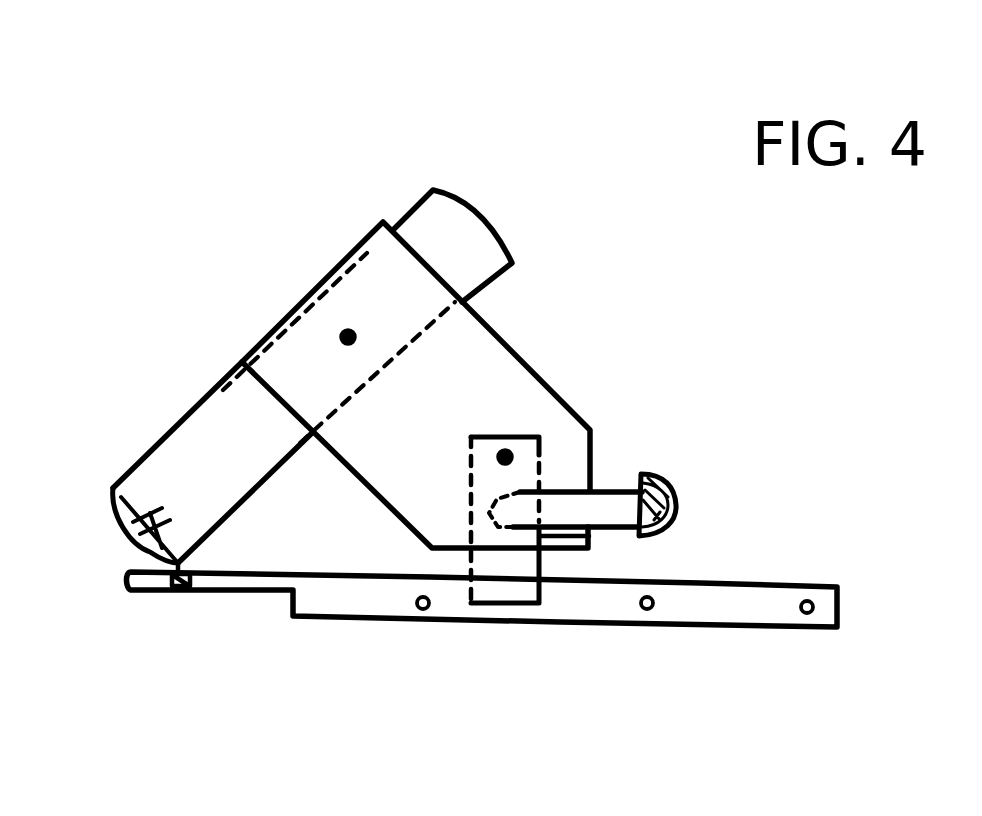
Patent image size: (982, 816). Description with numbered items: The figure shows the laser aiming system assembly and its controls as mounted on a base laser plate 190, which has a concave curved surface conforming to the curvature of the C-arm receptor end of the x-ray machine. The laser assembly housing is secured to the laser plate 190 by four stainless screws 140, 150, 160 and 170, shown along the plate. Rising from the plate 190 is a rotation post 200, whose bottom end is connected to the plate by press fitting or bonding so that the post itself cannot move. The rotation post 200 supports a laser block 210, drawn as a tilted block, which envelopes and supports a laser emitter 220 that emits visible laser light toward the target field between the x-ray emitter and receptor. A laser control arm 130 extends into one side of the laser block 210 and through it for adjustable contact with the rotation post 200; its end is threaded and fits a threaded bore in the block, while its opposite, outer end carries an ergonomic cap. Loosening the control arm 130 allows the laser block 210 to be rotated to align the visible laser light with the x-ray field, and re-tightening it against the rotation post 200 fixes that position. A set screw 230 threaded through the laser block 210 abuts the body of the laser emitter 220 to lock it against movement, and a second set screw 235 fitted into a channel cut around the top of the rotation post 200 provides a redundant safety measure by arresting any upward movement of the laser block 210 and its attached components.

The laser control arm 130 is at (677, 500).
The stainless screw 140 is at (801, 610).
The stainless screw 150 is at (641, 606).
The stainless screw 160 is at (400, 617).
The stainless screw 170 is at (162, 593).
The base laser plate 190 is at (767, 594).
The rotation post 200 is at (518, 588).
The laser block 210 is at (493, 331).
The laser emitter 220 is at (412, 200).
The set screw 230 is at (347, 325).
The second set screw 235 is at (515, 456).